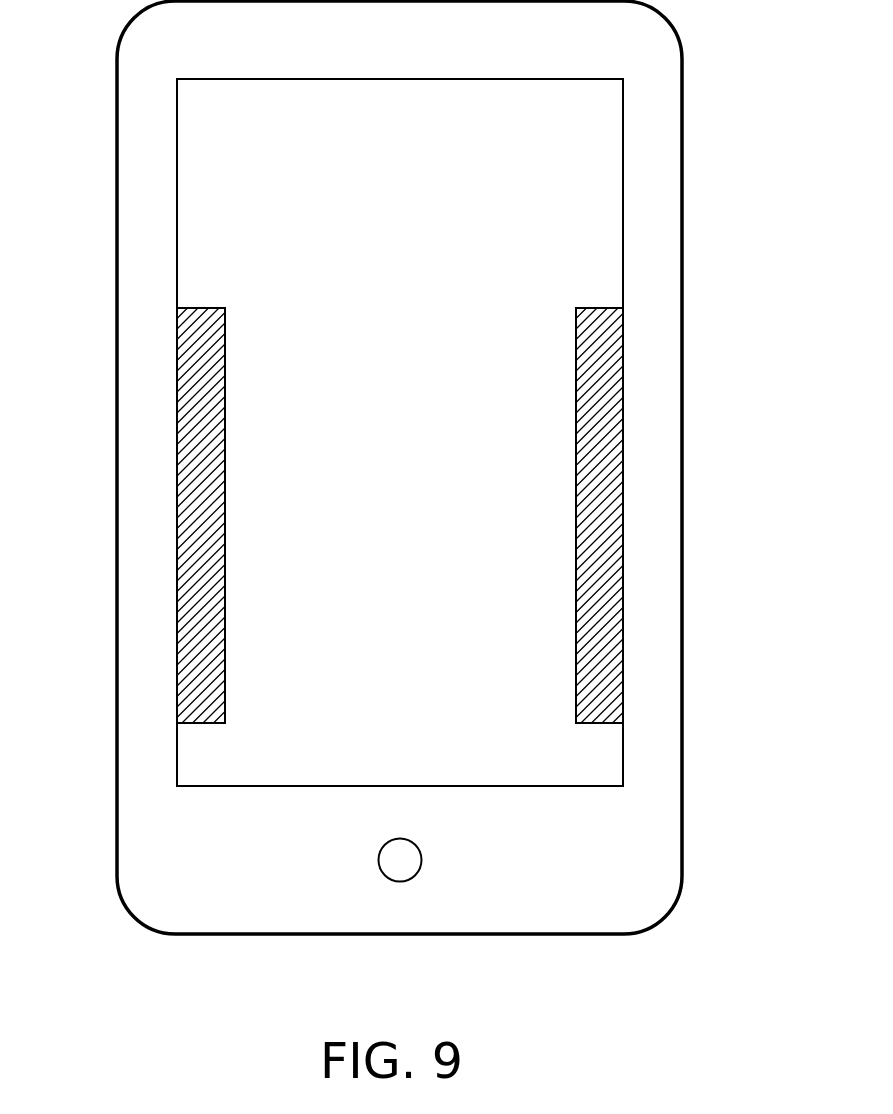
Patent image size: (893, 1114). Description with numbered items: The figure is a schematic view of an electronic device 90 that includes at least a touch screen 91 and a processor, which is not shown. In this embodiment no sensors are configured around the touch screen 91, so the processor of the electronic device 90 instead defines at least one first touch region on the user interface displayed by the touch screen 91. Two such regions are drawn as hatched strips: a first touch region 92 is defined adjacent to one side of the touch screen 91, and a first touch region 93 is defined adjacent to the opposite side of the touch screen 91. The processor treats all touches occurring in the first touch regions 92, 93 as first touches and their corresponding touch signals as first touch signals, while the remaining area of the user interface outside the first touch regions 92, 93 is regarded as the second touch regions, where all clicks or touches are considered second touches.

The electronic device 90 is at (117, 165).
The touch screen 91 is at (177, 280).
The first touch region 92 is at (177, 415).
The first touch region 93 is at (590, 352).